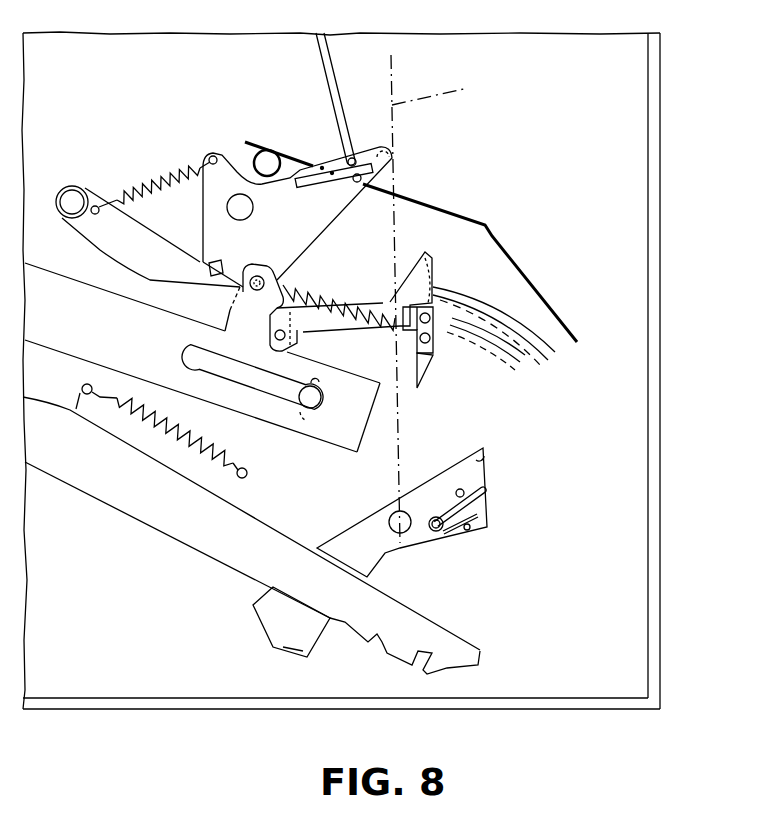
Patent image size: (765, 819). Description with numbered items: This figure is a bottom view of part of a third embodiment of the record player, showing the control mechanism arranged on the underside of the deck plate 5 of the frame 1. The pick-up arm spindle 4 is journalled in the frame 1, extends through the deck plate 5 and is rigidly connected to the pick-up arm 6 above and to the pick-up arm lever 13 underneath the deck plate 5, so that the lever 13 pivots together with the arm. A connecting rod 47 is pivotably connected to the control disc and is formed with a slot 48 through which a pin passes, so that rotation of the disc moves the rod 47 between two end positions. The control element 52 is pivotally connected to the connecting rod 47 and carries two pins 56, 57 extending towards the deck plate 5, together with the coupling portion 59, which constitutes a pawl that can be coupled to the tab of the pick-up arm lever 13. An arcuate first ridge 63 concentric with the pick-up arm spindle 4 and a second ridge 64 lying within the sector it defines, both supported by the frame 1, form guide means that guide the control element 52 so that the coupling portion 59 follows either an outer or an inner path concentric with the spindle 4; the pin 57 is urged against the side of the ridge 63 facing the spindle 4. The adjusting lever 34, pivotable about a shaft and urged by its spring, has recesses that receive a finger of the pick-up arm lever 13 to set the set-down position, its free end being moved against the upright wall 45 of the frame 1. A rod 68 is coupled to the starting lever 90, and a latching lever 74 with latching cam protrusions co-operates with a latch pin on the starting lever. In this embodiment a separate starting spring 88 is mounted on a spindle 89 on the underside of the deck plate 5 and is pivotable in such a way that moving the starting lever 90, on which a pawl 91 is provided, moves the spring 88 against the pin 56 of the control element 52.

The frame 1 is at (115, 718).
The pick-up arm spindle 4 is at (393, 518).
The deck plate 5 is at (217, 678).
The pick-up arm 6 is at (440, 299).
The pick-up arm lever 13 is at (362, 535).
The adjusting lever 34 is at (138, 496).
The upright wall 45 is at (545, 703).
The connecting rod 47 is at (90, 342).
The slot 48 is at (258, 383).
The control element 52 is at (375, 298).
The pin 56 is at (427, 258).
The pin 57 is at (436, 275).
The coupling portion 59 is at (428, 372).
The first ridge 63 is at (552, 354).
The second ridge 64 is at (517, 366).
The rod 68 is at (333, 80).
The latching lever 74 is at (120, 236).
The starting spring 88 is at (410, 197).
The spindle 89 is at (268, 165).
The starting lever 90 is at (313, 213).
The pawl 91 is at (390, 160).